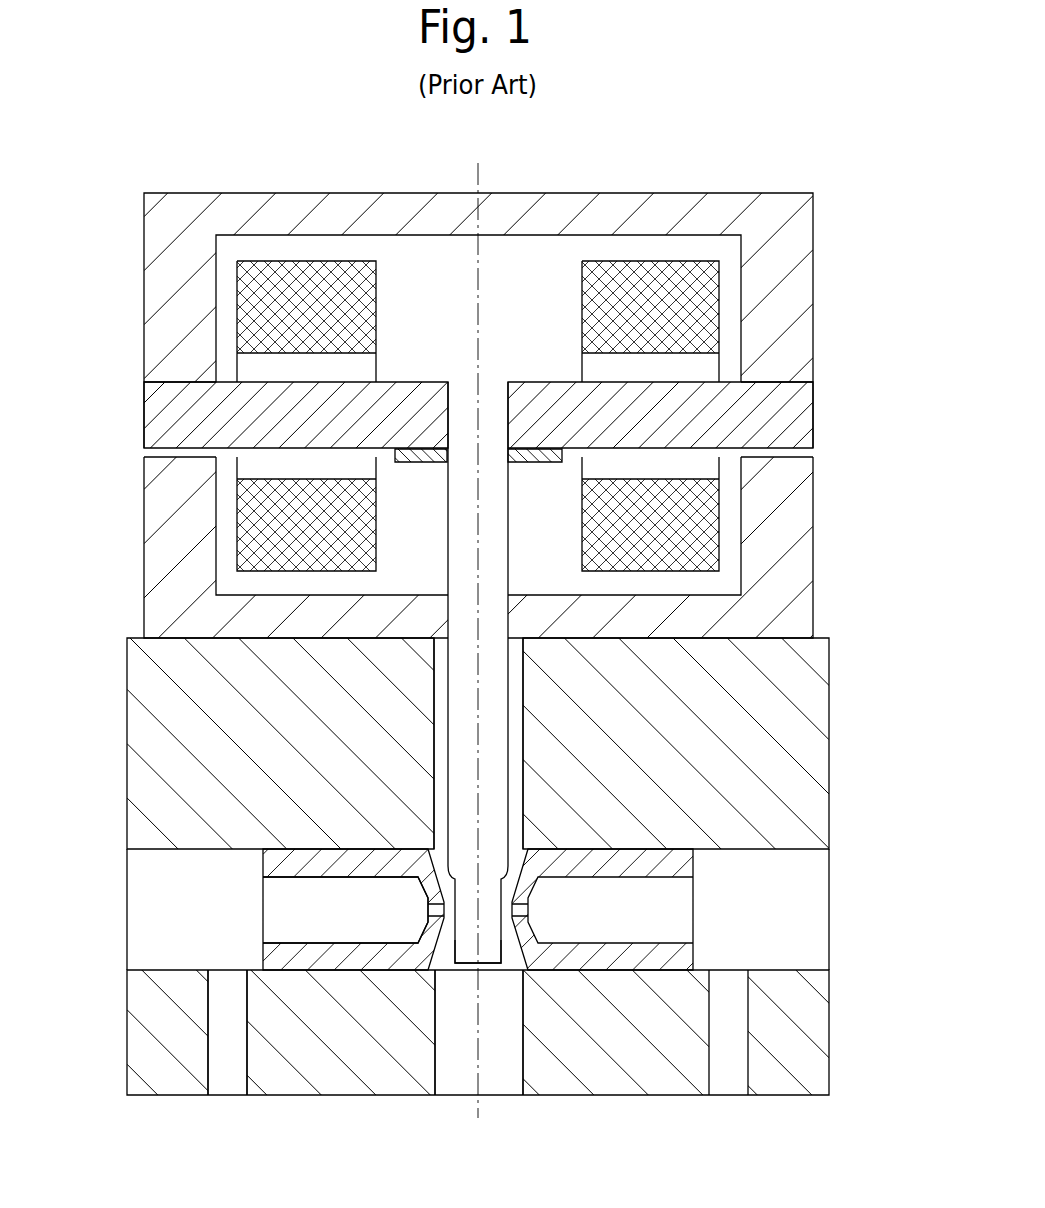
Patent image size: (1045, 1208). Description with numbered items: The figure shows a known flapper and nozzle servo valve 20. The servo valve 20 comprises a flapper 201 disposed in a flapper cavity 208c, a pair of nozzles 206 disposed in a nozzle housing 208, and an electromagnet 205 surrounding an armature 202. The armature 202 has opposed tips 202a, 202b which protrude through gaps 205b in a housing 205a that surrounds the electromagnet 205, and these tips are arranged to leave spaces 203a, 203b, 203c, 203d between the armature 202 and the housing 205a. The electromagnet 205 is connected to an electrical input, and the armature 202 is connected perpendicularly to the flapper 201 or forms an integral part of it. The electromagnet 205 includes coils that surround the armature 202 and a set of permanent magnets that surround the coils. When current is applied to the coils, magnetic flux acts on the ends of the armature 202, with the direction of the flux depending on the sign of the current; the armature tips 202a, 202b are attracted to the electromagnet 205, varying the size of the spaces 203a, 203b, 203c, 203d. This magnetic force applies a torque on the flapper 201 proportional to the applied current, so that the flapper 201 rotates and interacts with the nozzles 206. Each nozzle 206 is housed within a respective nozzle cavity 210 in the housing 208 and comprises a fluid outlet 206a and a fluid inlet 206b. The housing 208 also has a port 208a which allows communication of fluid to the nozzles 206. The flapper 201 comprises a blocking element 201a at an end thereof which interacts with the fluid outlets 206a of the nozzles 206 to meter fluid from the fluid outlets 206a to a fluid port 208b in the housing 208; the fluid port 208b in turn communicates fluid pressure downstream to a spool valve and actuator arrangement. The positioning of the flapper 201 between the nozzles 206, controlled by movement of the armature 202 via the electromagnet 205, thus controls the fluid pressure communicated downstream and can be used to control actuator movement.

The flapper and nozzle servo valve 20 is at (164, 168).
The flapper 201 is at (497, 397).
The blocking element 201a is at (490, 948).
The armature 202 is at (805, 435).
The armature tip 202a is at (143, 398).
The armature tip 202b is at (815, 402).
The space 203a is at (787, 376).
The space 203b is at (783, 452).
The space 203c is at (178, 374).
The space 203d is at (185, 458).
The electromagnet 205 is at (660, 272).
The housing 205a is at (158, 231).
The gap 205b is at (128, 457).
The nozzle 206 is at (270, 955).
The fluid outlet 206a is at (434, 906).
The fluid inlet 206b is at (275, 890).
The nozzle housing 208 is at (148, 685).
The port 208a is at (227, 1085).
The fluid port 208b is at (455, 1075).
The flapper cavity 208c is at (515, 730).
The nozzle cavity 210 is at (147, 882).